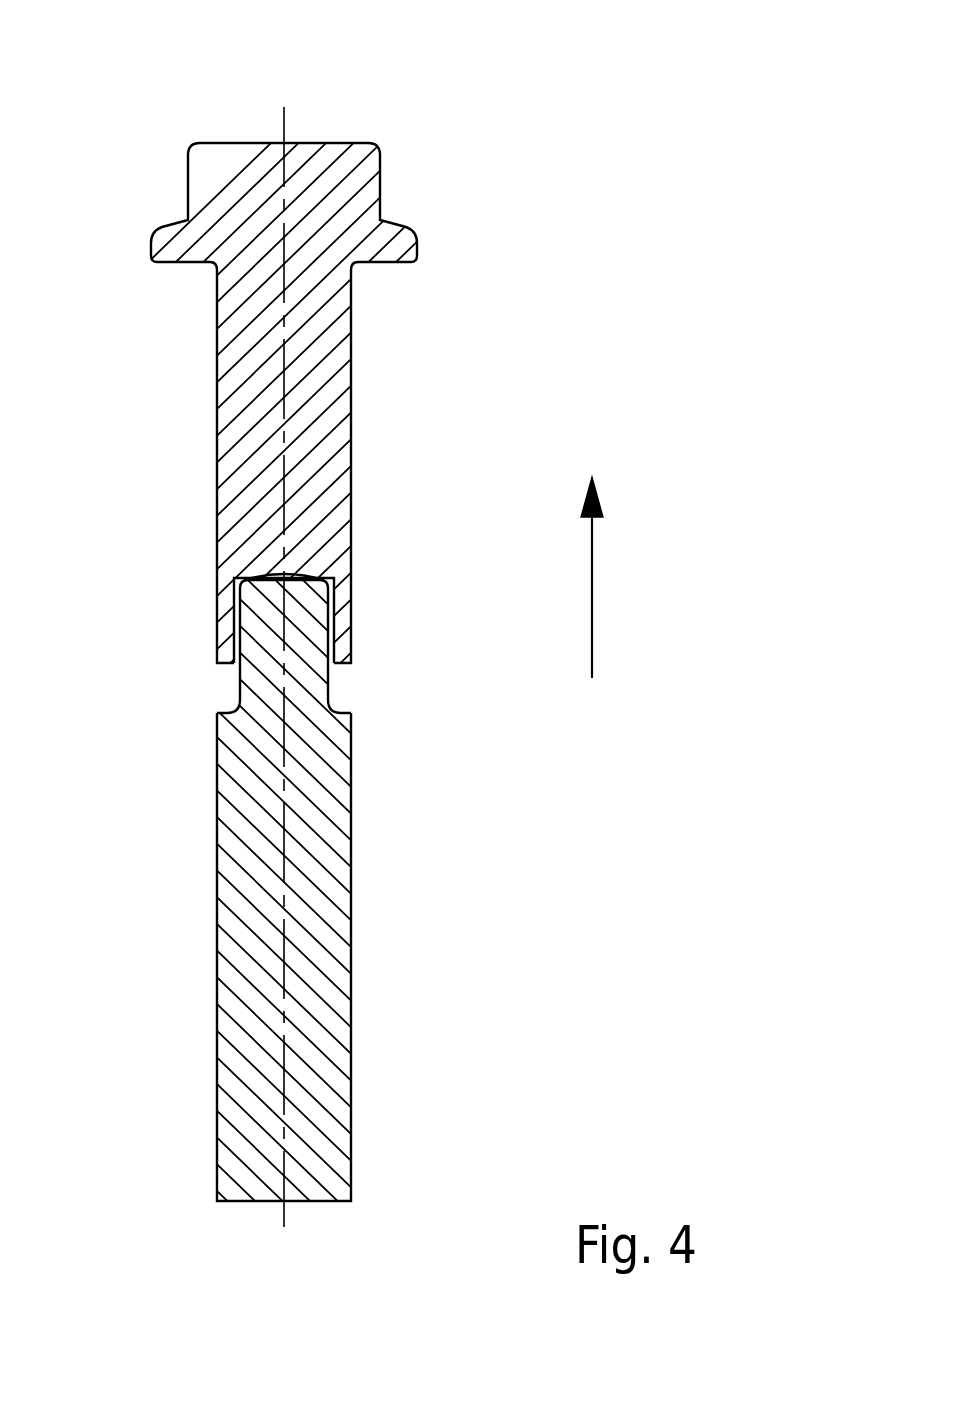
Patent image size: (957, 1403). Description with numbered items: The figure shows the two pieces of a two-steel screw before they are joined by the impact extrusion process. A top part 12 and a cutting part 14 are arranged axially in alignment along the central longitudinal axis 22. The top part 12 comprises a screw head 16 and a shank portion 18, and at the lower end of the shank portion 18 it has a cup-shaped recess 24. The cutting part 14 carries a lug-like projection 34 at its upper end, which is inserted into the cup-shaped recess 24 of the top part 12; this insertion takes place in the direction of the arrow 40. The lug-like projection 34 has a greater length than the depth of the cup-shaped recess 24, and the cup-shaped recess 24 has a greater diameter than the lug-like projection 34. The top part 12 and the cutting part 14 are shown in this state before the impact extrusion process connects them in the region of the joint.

The top part 12 is at (390, 243).
The cutting part 14 is at (351, 978).
The screw head 16 is at (380, 197).
The shank portion 18 is at (350, 448).
The central longitudinal axis 22 is at (284, 119).
The cup-shaped recess 24 is at (334, 616).
The lug-like projection 34 is at (303, 692).
The arrow 40 is at (592, 597).